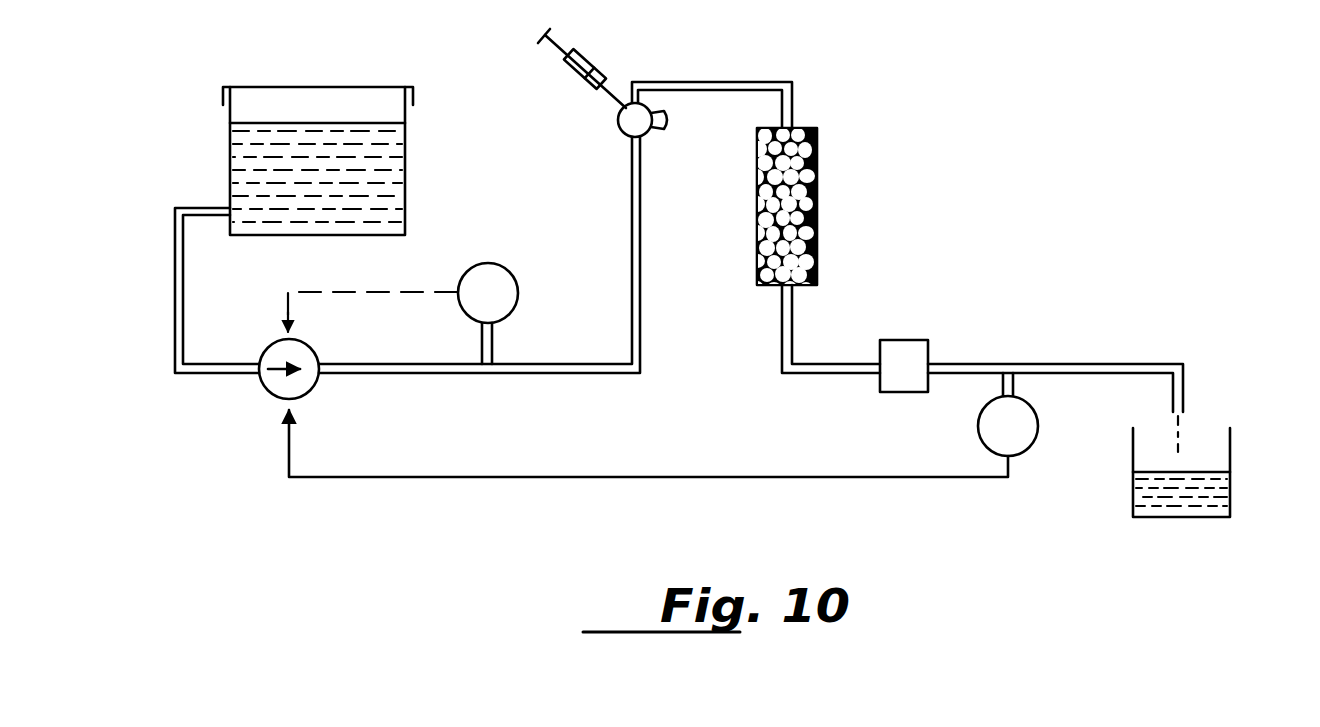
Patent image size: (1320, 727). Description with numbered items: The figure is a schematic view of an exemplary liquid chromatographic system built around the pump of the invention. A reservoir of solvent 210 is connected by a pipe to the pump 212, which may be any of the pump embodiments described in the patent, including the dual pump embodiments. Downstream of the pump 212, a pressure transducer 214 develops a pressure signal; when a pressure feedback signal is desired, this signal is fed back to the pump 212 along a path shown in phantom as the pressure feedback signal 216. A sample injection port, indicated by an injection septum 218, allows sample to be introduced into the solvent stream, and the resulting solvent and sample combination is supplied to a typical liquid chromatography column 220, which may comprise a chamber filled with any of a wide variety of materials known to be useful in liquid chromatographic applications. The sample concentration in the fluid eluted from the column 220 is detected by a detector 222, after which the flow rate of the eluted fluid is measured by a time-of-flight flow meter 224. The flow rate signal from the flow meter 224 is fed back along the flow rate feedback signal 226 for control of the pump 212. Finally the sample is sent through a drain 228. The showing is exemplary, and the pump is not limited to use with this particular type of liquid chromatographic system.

The reservoir of solvent 210 is at (230, 146).
The pump 212 is at (258, 402).
The pressure transducer 214 is at (490, 263).
The pressure feedback signal 216 is at (355, 292).
The injection septum 218 is at (580, 90).
The liquid chromatography column 220 is at (817, 200).
The detector 222 is at (929, 346).
The time-of-flight flow meter 224 is at (978, 424).
The flow rate feedback signal 226 is at (600, 480).
The drain 228 is at (1230, 452).